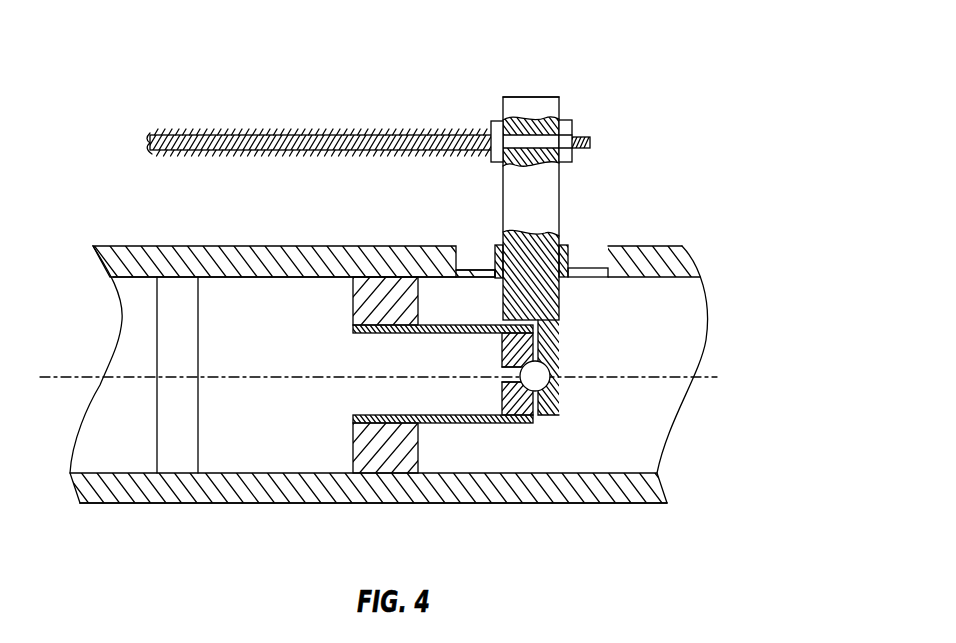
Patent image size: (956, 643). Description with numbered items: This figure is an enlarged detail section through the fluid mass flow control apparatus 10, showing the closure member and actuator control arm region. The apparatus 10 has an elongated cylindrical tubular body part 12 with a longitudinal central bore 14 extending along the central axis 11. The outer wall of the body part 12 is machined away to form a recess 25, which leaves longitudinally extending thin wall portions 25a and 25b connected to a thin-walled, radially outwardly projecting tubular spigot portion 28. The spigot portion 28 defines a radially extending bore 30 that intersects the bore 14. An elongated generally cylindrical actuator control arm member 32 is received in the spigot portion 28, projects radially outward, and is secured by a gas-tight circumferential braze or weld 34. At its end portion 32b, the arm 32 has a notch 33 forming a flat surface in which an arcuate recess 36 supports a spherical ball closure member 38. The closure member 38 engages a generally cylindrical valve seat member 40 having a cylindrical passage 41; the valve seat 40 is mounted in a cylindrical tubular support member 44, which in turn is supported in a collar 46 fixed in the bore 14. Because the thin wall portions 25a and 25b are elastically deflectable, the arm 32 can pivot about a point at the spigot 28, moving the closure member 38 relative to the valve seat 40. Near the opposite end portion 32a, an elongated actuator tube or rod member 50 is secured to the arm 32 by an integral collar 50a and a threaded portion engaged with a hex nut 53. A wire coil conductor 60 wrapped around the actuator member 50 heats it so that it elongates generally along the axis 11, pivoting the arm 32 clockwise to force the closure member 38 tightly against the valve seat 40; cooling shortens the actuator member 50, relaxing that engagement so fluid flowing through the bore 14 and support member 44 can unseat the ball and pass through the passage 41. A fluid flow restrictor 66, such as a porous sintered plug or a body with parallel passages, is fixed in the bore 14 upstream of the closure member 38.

The fluid mass flow control apparatus 10 is at (748, 168).
The central axis 11 is at (717, 377).
The tubular body part 12 is at (122, 503).
The bore 14 is at (580, 473).
The recess 25 is at (358, 300).
The thin wall portion 25a is at (468, 268).
The thin wall portion 25b is at (591, 290).
The spigot portion 28 is at (568, 258).
The radially extending bore 30 is at (533, 233).
The actuator control arm member 32 is at (535, 97).
The end portion of arm 32a is at (562, 110).
The end portion of arm 32b is at (549, 420).
The notch 33 is at (522, 427).
The braze or weld 34 is at (480, 268).
The arcuate recess 36 is at (552, 372).
The spherical ball closure member 38 is at (502, 370).
The valve seat member 40 is at (523, 345).
The cylindrical passage 41 is at (447, 427).
The tubular support member 44 is at (425, 325).
The collar 46 is at (353, 302).
The actuator tube or rod member 50 is at (155, 135).
The integral collar 50a is at (491, 128).
The hex nut 53 is at (572, 123).
The wire coil conductor 60 is at (270, 130).
The fluid flow restrictor 66 is at (200, 397).